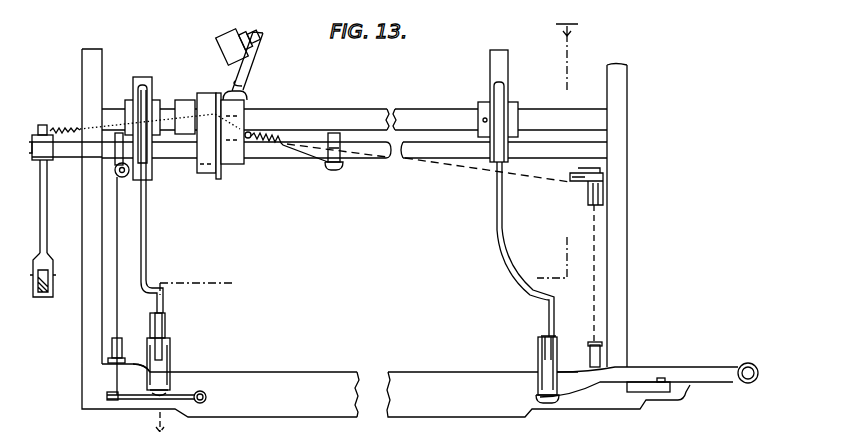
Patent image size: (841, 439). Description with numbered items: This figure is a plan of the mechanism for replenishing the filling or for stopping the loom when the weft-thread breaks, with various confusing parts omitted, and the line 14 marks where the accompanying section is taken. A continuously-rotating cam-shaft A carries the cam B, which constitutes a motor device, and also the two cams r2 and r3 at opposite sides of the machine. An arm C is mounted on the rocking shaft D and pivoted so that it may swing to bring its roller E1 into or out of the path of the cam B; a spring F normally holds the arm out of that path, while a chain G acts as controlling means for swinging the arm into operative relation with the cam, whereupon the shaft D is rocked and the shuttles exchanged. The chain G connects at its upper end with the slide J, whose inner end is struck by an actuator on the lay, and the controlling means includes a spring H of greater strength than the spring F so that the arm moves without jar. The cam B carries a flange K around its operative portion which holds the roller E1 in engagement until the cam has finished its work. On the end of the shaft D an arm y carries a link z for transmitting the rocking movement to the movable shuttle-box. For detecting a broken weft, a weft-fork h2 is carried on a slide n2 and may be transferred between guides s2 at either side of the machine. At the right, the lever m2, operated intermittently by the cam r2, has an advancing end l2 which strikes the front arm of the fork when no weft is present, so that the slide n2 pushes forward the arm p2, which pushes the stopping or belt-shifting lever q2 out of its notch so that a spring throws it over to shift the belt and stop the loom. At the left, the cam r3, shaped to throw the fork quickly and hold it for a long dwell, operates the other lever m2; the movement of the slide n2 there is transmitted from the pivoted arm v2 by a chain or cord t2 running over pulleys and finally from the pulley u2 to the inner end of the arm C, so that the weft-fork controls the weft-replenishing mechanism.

The continuously-rotating shaft A is at (316, 109).
The rocking shaft D is at (380, 160).
The cam B is at (205, 178).
The flange K is at (224, 174).
The arm C is at (248, 88).
The roller E1 is at (222, 40).
The spring H is at (282, 138).
The pulley u2 is at (335, 172).
The cam r3 is at (145, 78).
The spring F is at (58, 128).
The arm y is at (54, 205).
The link z is at (45, 295).
The lever m2 is at (148, 243).
The chain or cord t2 is at (127, 316).
The weft-fork h2 is at (168, 308).
The guides s2 is at (172, 355).
The slide n2 is at (165, 378).
The pivoted arm v2 is at (132, 400).
The cam r2 is at (500, 68).
The section line 14 is at (367, 219).
The chain G is at (560, 178).
The advancing end l2 is at (540, 336).
The slide J is at (602, 358).
The arm p2 is at (597, 393).
The stopping or belt-shifting lever q2 is at (662, 395).